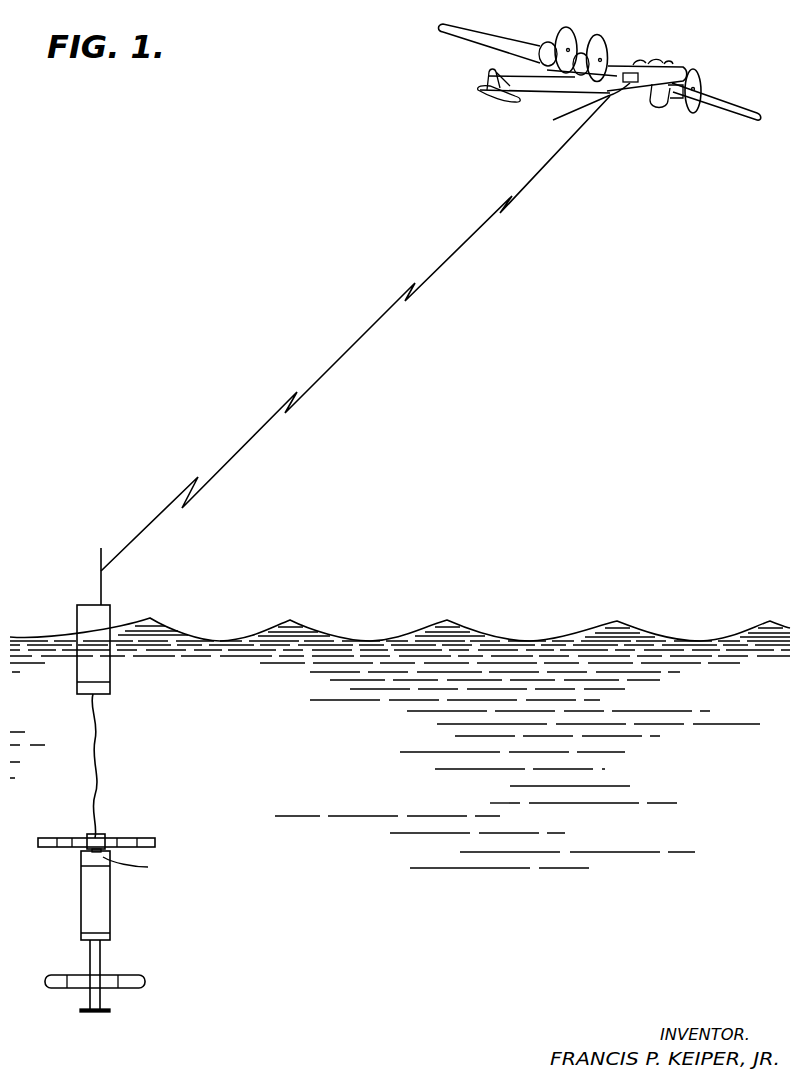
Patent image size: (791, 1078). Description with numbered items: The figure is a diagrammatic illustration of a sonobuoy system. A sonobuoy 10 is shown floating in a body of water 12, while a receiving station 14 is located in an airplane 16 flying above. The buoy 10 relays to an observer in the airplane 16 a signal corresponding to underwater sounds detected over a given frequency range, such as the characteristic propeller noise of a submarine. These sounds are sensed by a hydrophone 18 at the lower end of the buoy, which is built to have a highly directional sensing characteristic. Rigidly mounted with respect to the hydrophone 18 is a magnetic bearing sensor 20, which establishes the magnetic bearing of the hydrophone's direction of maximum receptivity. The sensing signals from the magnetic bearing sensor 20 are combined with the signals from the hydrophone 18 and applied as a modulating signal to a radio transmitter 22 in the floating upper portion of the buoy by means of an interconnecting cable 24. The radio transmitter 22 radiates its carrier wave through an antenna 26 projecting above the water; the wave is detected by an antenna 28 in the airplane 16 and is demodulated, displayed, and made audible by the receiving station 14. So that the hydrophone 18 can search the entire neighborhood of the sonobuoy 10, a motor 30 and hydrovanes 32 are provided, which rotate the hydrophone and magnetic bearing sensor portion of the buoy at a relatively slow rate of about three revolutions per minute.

The sonobuoy 10 is at (80, 578).
The body of water 12 is at (502, 636).
The receiving station 14 is at (633, 84).
The airplane 16 is at (672, 65).
The hydrophone 18 is at (133, 975).
The magnetic bearing sensor 20 is at (107, 1012).
The radio transmitter 22 is at (98, 663).
The interconnecting cable 24 is at (93, 719).
The antenna 26 is at (103, 595).
The antenna 28 is at (543, 115).
The motor 30 is at (90, 836).
The hydrovanes 32 is at (127, 838).